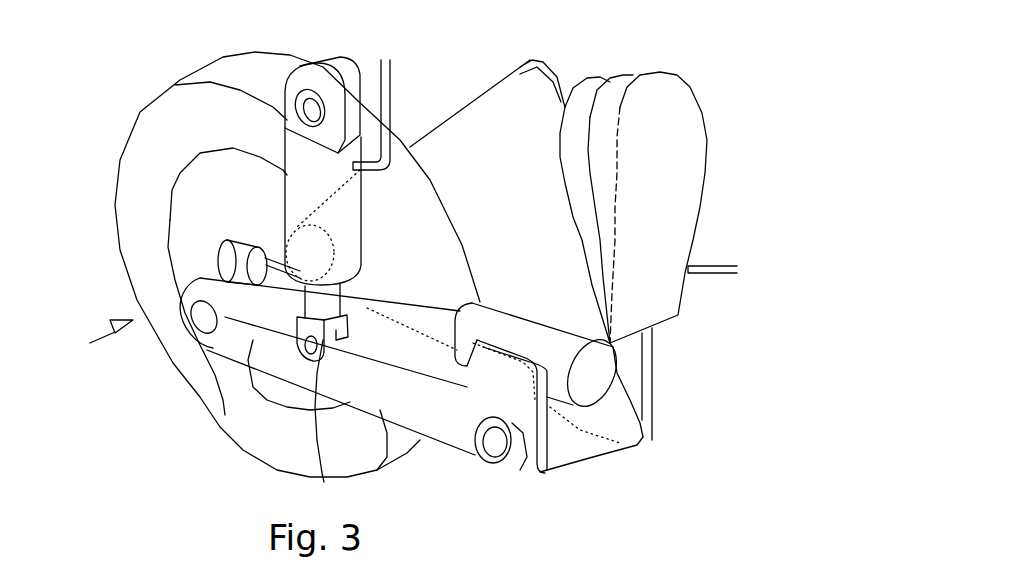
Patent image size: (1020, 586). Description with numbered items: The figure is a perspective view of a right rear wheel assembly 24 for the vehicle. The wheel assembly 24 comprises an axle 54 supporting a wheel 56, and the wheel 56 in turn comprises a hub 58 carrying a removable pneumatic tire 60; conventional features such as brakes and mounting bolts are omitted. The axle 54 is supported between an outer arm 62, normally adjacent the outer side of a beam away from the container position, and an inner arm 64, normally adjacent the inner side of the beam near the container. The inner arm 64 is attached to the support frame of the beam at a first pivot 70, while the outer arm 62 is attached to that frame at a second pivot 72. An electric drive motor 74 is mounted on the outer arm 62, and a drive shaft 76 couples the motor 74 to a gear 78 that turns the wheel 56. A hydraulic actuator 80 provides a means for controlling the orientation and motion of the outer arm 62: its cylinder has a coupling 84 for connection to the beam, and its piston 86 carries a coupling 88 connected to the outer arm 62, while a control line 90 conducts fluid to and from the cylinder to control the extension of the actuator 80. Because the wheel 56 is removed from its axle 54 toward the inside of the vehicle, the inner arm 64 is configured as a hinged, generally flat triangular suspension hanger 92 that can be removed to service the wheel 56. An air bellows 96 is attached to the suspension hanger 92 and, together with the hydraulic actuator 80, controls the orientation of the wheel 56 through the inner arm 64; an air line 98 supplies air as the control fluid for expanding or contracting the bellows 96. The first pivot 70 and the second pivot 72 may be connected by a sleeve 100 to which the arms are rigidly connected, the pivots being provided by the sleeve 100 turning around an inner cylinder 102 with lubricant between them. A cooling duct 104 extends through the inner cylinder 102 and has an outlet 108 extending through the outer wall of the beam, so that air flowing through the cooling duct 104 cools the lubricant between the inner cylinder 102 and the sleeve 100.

The right rear wheel assembly 24 is at (97, 344).
The axle 54 is at (178, 358).
The wheel 56 is at (296, 264).
The hub 58 is at (229, 213).
The removable pneumatic tire 60 is at (231, 66).
The outer arm 62 is at (382, 412).
The inner arm 64 is at (600, 388).
The first pivot 70 is at (650, 430).
The second pivot 72 is at (547, 470).
The electric drive motor 74 is at (600, 367).
The drive shaft 76 is at (351, 422).
The gear 78 is at (170, 217).
The hydraulic actuator 80 is at (487, 103).
The coupling 84 is at (331, 150).
The piston 86 is at (223, 426).
The coupling 88 is at (278, 385).
The control line 90 is at (397, 98).
The suspension hanger 92 is at (695, 384).
The air bellows 96 is at (657, 193).
The air line 98 is at (724, 237).
The sleeve 100 is at (634, 430).
The inner cylinder 102 is at (527, 473).
The cooling duct 104 is at (493, 453).
The outlet 108 is at (478, 426).